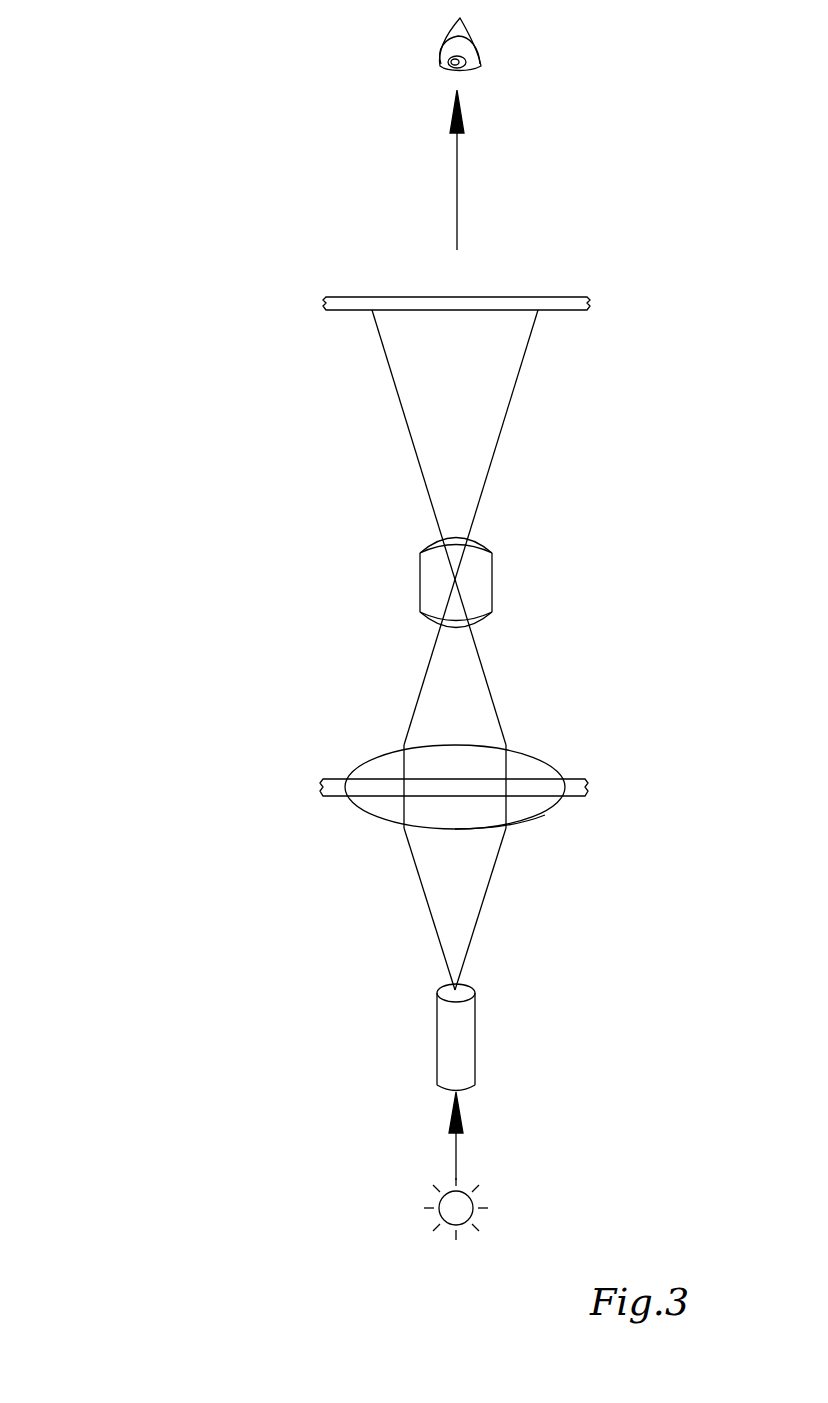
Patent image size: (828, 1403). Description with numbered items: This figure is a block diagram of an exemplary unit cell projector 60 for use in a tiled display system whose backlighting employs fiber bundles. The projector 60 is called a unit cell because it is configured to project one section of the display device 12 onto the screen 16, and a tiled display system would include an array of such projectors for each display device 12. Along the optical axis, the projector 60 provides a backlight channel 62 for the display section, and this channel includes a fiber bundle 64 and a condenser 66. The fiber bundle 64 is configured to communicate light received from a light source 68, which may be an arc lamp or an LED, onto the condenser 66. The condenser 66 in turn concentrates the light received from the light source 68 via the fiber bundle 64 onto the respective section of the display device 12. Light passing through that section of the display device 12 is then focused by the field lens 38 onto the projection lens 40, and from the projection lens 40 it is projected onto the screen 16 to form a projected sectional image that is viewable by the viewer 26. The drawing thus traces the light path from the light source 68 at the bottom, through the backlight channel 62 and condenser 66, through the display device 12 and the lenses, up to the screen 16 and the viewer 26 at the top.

The unit cell projector 60 is at (158, 225).
The viewer 26 is at (466, 40).
The screen 16 is at (577, 297).
The projection lens 40 is at (494, 557).
The field lens 38 is at (536, 753).
The display device 12 is at (579, 779).
The condenser 66 is at (545, 818).
The fiber bundle 64 is at (470, 1025).
The backlight channel 62 is at (424, 1105).
The light source 68 is at (462, 1230).